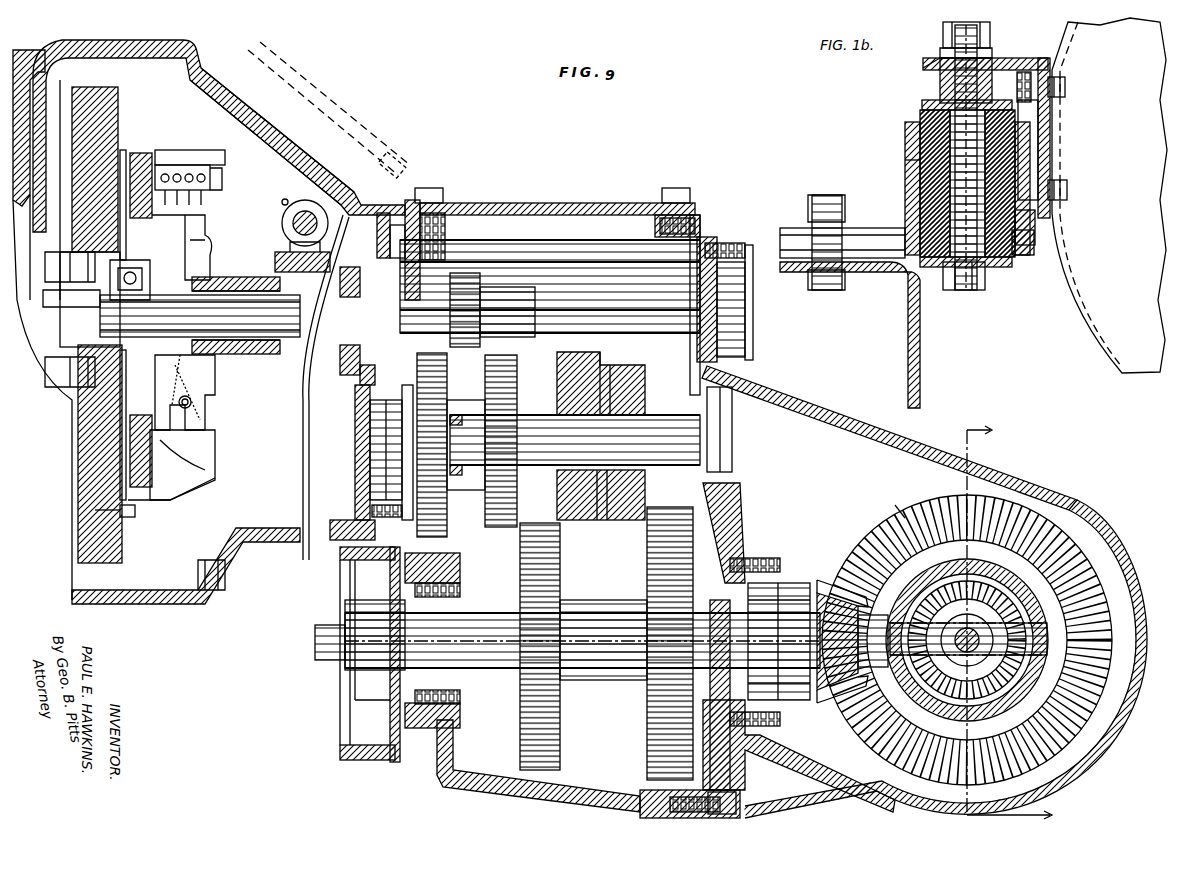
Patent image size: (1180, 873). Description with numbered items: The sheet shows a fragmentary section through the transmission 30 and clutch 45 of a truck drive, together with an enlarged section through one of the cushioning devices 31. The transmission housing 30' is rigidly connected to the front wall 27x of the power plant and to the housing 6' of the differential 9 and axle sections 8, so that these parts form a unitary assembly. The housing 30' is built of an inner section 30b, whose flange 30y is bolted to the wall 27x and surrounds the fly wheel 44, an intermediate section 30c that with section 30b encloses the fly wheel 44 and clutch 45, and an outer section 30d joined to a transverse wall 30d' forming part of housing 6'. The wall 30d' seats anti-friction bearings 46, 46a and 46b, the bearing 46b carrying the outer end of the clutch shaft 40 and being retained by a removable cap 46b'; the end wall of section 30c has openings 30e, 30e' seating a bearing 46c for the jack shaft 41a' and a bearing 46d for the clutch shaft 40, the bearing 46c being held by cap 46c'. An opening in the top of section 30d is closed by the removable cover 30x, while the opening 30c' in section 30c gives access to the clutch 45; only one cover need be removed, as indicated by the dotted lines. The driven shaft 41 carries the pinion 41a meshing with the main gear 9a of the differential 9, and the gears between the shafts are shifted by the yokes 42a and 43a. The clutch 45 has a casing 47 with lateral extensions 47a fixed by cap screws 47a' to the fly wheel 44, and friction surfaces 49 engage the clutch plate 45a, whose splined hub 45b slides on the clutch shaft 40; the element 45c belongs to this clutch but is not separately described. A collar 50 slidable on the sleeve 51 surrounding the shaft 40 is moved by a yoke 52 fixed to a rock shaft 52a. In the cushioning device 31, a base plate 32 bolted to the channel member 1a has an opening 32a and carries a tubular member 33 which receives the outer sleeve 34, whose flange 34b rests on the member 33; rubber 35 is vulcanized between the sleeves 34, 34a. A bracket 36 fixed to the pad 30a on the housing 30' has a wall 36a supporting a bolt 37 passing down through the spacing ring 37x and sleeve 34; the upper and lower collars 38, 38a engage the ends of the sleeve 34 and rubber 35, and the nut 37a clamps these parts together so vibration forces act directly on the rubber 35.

In FIG. 9, the front wall 27x is at (52, 60).
In FIG. 9, the flange 30y is at (62, 125).
In FIG. 9, the opening 30c' is at (272, 136).
In FIG. 9, the removable cover 30x is at (322, 108).
In FIG. 9, the fly wheel 44 is at (118, 116).
In FIG. 9, the friction surfaces 49 is at (124, 150).
In FIG. 9, the anti-friction bearing 46 is at (145, 153).
In FIG. 9, the clutch springs 45c is at (220, 180).
In FIG. 9, the casing 47 is at (208, 232).
In FIG. 9, the hub 45b is at (152, 272).
In FIG. 9, the sleeve 51 is at (240, 290).
In FIG. 9, the collar 50 is at (265, 354).
In FIG. 9, the rock shaft 52a is at (293, 223).
In FIG. 9, the yoke 52 is at (290, 252).
In FIG. 9, the clutch 45 is at (205, 410).
In FIG. 9, the lateral extensions 47a is at (190, 465).
In FIG. 9, the clutch plate 45a is at (145, 502).
In FIG. 9, the cap screws 47a' is at (129, 526).
In FIG. 9, the intermediate section 30c is at (306, 400).
In FIG. 9, the inner section 30b is at (172, 605).
In FIG. 9, the opening 30e' is at (367, 294).
In FIG. 9, the transverse wall 30d' is at (590, 503).
In FIG. 9, the clutch shaft 40 is at (615, 328).
In FIG. 9, the yoke 42a is at (480, 290).
In FIG. 9, the bearing 46d is at (360, 368).
In FIG. 9, the opening 30e is at (362, 462).
In FIG. 9, the bearing 46c is at (362, 450).
In FIG. 9, the removable cap 46c' is at (367, 452).
In FIG. 9, the jack shaft 41a' is at (575, 426).
In FIG. 9, the yoke 43a is at (597, 522).
In FIG. 9, the bearing 46b is at (736, 305).
In FIG. 9, the removable cap 46b' is at (765, 302).
In FIG. 9, the anti-friction bearing 46a is at (732, 428).
In FIG. 9, the housing 6' is at (924, 592).
In FIG. 9, the differential 9 is at (935, 500).
In FIG. 9, the main gear 9a is at (891, 504).
In FIG. 9, the axle sections 8 is at (1018, 623).
In FIG. 9, the pinion 41a is at (850, 619).
In FIG. 9, the driven shaft 41 is at (598, 614).
In FIG. 9, the transmission 30 is at (604, 648).
In FIG. 9, the transmission housing 30' is at (387, 657).
In FIG. 9, the outer section 30d is at (532, 766).
In FIG. 1B, the bolt 37 is at (962, 280).
In FIG. 1B, the nut 37a is at (985, 40).
In FIG. 1B, the spacing ring 37x is at (938, 88).
In FIG. 1B, the laterally extending wall 36a is at (1026, 58).
In FIG. 1B, the bracket 36 is at (1050, 133).
In FIG. 1B, the upper collar 38 is at (1050, 107).
In FIG. 1B, the outer sleeve 34 is at (990, 112).
In FIG. 1B, the annular flange 34b is at (920, 104).
In FIG. 1B, the inner sleeve 34a is at (908, 135).
In FIG. 1B, the tubular member 33 is at (905, 204).
In FIG. 1B, the cushioning device 31 is at (898, 160).
In FIG. 1B, the base plate 32 is at (855, 225).
In FIG. 1B, the channel member 1a is at (920, 380).
In FIG. 1B, the opening 32a is at (1034, 246).
In FIG. 1B, the yieldable material 35 is at (1015, 262).
In FIG. 1B, the lower collar 38a is at (998, 268).
In FIG. 1B, the pad 30a is at (1062, 72).